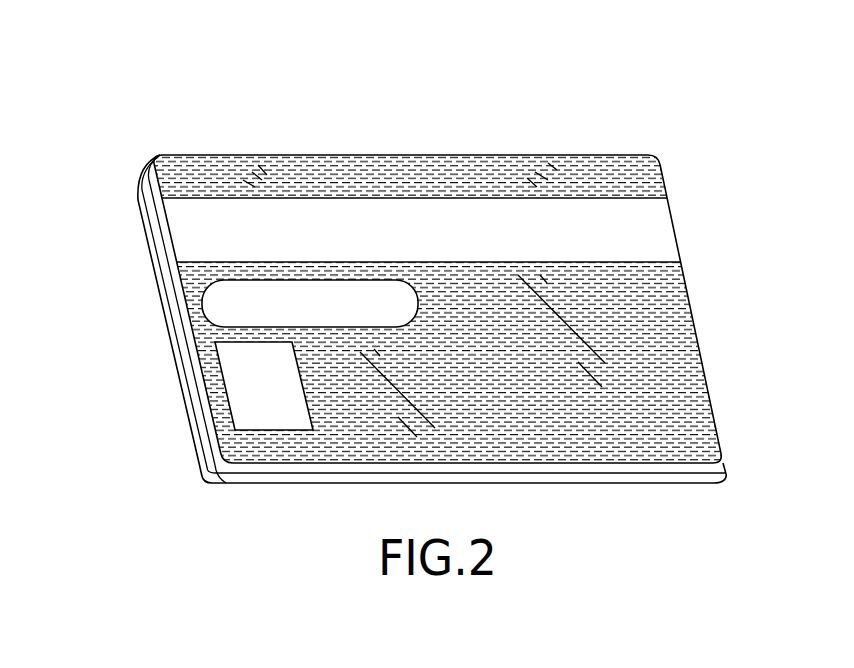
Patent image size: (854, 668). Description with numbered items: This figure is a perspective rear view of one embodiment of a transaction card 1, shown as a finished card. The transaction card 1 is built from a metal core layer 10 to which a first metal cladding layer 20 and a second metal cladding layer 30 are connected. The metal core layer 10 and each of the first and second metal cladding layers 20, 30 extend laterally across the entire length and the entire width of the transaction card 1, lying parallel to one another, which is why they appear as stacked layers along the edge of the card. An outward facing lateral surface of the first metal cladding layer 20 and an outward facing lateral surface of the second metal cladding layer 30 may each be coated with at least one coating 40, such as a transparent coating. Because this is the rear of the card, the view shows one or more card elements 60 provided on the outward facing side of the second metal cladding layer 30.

The transaction card 1 is at (595, 109).
The metal core layer 10 is at (159, 230).
The first metal cladding layer 20 is at (153, 272).
The second metal cladding layer 30 is at (159, 190).
The coating 40 is at (578, 335).
The card elements 60 is at (232, 247).